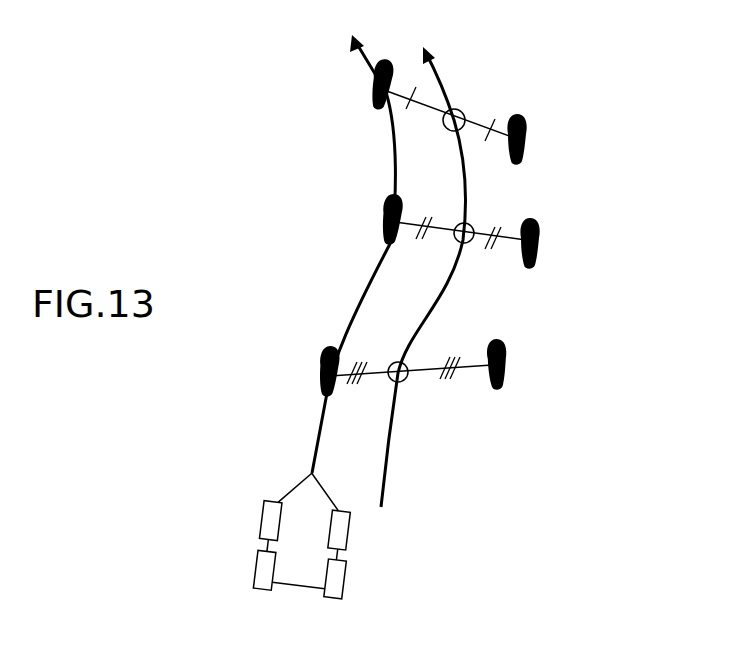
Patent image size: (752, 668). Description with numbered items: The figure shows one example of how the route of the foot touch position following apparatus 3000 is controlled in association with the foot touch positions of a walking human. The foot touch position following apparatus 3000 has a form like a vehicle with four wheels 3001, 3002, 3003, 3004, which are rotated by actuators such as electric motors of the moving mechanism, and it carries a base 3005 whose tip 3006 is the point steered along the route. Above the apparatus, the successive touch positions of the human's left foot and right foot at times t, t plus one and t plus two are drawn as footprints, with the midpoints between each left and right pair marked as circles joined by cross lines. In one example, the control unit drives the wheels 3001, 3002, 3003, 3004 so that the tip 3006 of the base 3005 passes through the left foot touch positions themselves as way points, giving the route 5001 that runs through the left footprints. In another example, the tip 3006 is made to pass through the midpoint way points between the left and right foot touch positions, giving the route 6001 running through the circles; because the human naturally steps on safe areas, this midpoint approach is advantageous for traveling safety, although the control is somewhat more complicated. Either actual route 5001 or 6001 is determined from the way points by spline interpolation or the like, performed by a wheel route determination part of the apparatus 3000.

The route 5001 is at (357, 300).
The route 6001 is at (457, 273).
The foot touch position following apparatus 3000 is at (304, 521).
The wheel 3001 is at (263, 524).
The wheel 3002 is at (349, 532).
The wheel 3003 is at (258, 567).
The wheel 3004 is at (344, 582).
The base 3005 is at (295, 588).
The tip 3006 is at (312, 468).